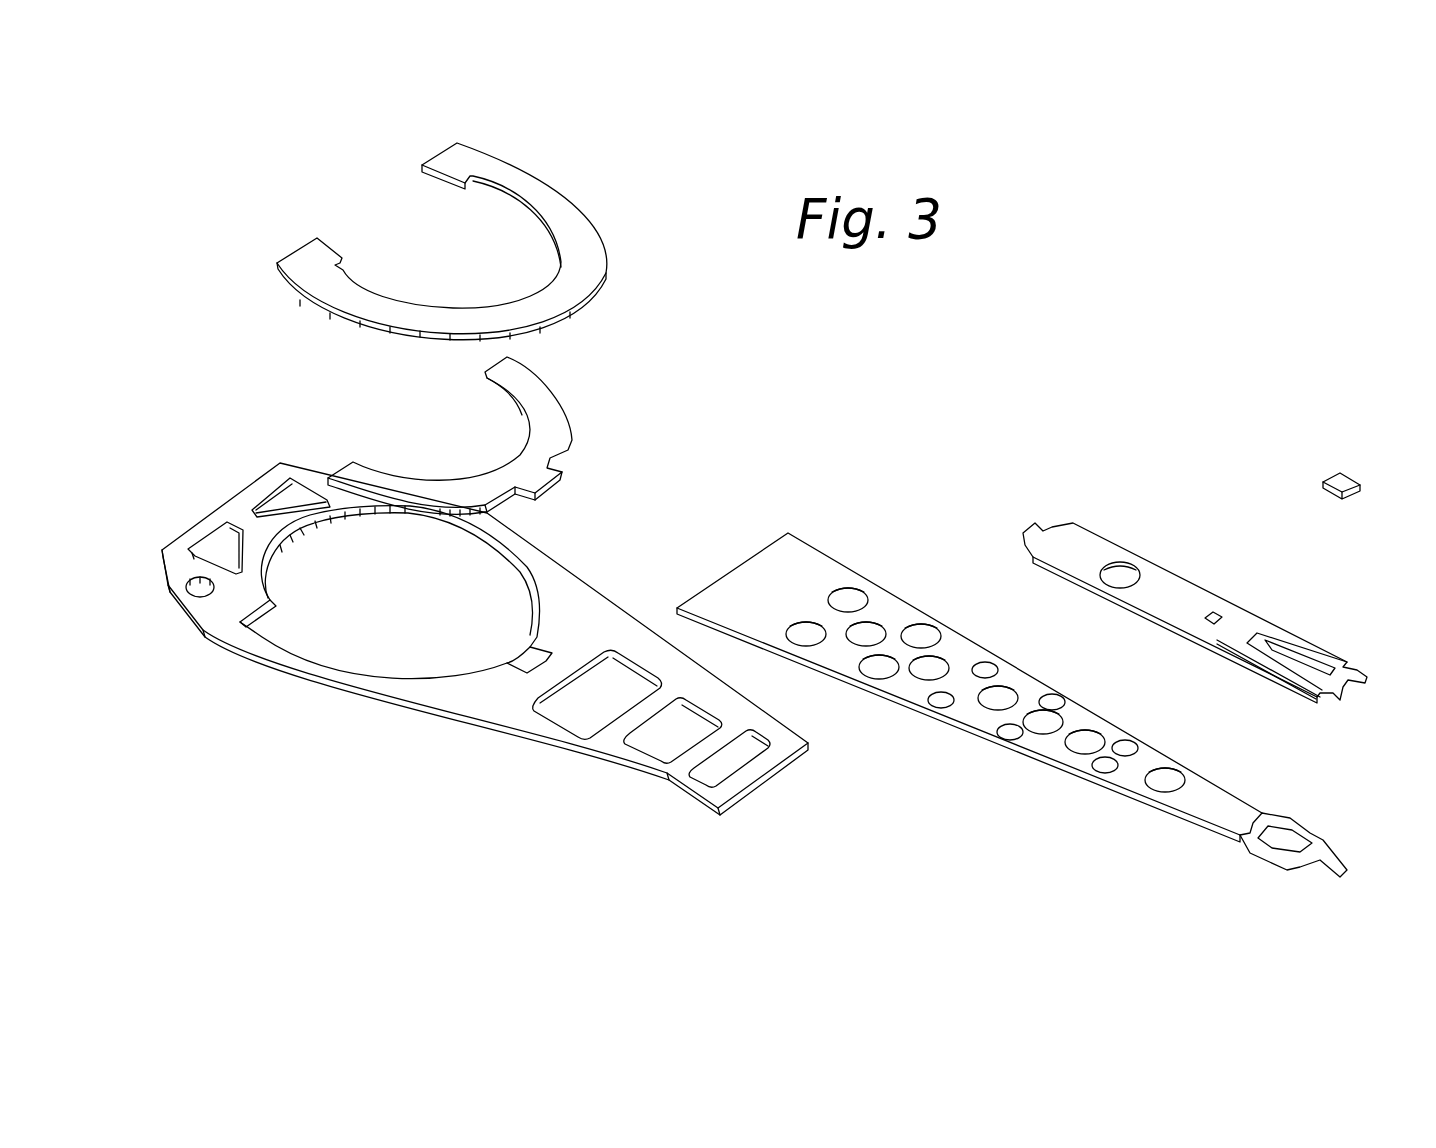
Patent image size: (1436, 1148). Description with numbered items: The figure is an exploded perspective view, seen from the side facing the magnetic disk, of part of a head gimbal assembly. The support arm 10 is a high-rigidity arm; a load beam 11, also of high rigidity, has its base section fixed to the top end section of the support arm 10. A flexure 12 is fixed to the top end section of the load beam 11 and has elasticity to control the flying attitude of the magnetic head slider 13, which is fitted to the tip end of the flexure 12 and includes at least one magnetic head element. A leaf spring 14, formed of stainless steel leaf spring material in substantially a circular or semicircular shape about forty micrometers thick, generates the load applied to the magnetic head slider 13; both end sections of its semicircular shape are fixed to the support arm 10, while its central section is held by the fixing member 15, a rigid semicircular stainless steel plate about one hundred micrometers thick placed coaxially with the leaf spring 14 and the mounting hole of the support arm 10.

The support arm 10 is at (572, 597).
The load beam 11 is at (1033, 740).
The flexure 12 is at (1198, 597).
The magnetic head slider 13 is at (1348, 482).
The leaf spring 14 is at (540, 196).
The fixing member 15 is at (547, 412).